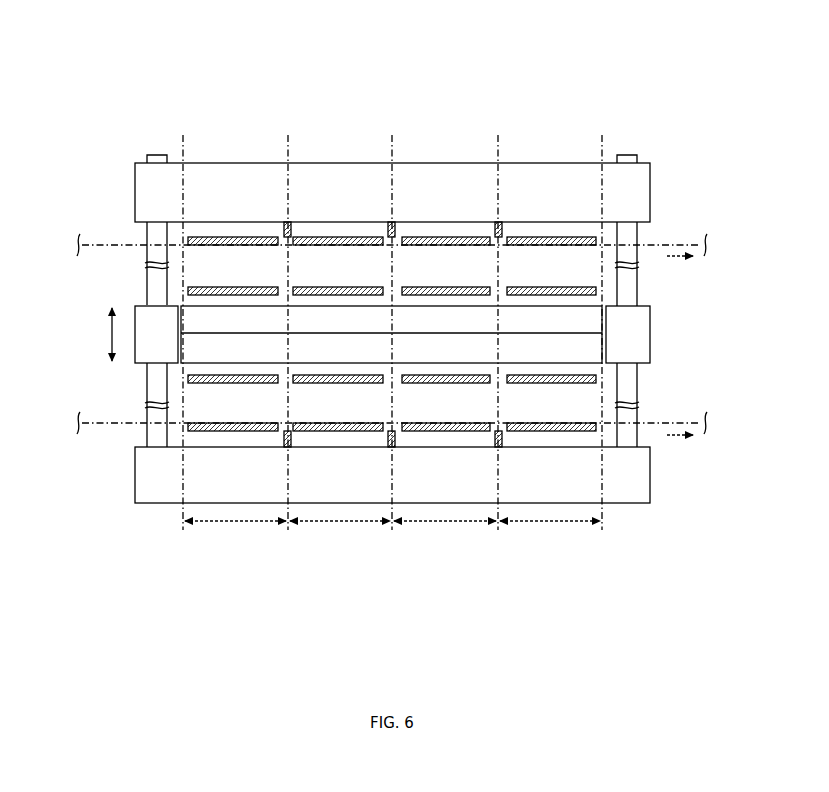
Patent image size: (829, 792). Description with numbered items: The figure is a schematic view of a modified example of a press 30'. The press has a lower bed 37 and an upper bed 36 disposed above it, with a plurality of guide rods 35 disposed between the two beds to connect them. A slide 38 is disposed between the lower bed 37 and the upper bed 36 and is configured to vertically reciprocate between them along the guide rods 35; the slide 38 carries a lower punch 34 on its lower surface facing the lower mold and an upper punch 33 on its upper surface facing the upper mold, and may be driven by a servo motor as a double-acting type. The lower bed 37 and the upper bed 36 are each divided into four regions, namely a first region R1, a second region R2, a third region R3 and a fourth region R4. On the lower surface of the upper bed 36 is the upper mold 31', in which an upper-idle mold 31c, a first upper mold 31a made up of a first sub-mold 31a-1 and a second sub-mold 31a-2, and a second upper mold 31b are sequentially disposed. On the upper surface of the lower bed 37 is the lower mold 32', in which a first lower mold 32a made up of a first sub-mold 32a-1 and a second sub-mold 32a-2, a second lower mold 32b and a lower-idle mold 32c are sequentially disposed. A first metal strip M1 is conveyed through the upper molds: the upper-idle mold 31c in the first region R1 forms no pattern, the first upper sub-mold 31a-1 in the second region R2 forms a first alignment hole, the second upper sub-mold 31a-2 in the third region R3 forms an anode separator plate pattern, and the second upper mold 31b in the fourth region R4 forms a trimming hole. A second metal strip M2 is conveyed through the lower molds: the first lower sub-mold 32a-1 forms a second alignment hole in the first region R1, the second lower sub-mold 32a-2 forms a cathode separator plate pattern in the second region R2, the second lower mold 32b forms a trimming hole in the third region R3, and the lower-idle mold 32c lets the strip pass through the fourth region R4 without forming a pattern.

The press 30' is at (384, 334).
The upper mold 31' is at (437, 129).
The first upper mold 31a is at (405, 97).
The 1-1 upper mold 31a-1 is at (370, 237).
The 1-2 upper mold 31a-2 is at (467, 237).
The second upper mold 31b is at (542, 237).
The upper-idle mold 31c is at (242, 237).
The lower mold 32' is at (387, 539).
The first lower mold 32a is at (283, 575).
The 1-1 lower mold 32a-1 is at (212, 431).
The 1-2 lower mold 32a-2 is at (308, 431).
The second lower mold 32b is at (430, 431).
The lower-idle mold 32c is at (542, 431).
The upper punch 33 is at (600, 297).
The lower punch 34 is at (185, 369).
The guide rod 35 is at (437, 158).
The upper bed 36 is at (648, 189).
The lower bed 37 is at (648, 477).
The slide 38 is at (648, 333).
The first metal strip M1 is at (105, 250).
The second metal strip M2 is at (106, 428).
The first region R1 is at (235, 531).
The second region R2 is at (340, 531).
The third region R3 is at (445, 531).
The fourth region R4 is at (550, 531).